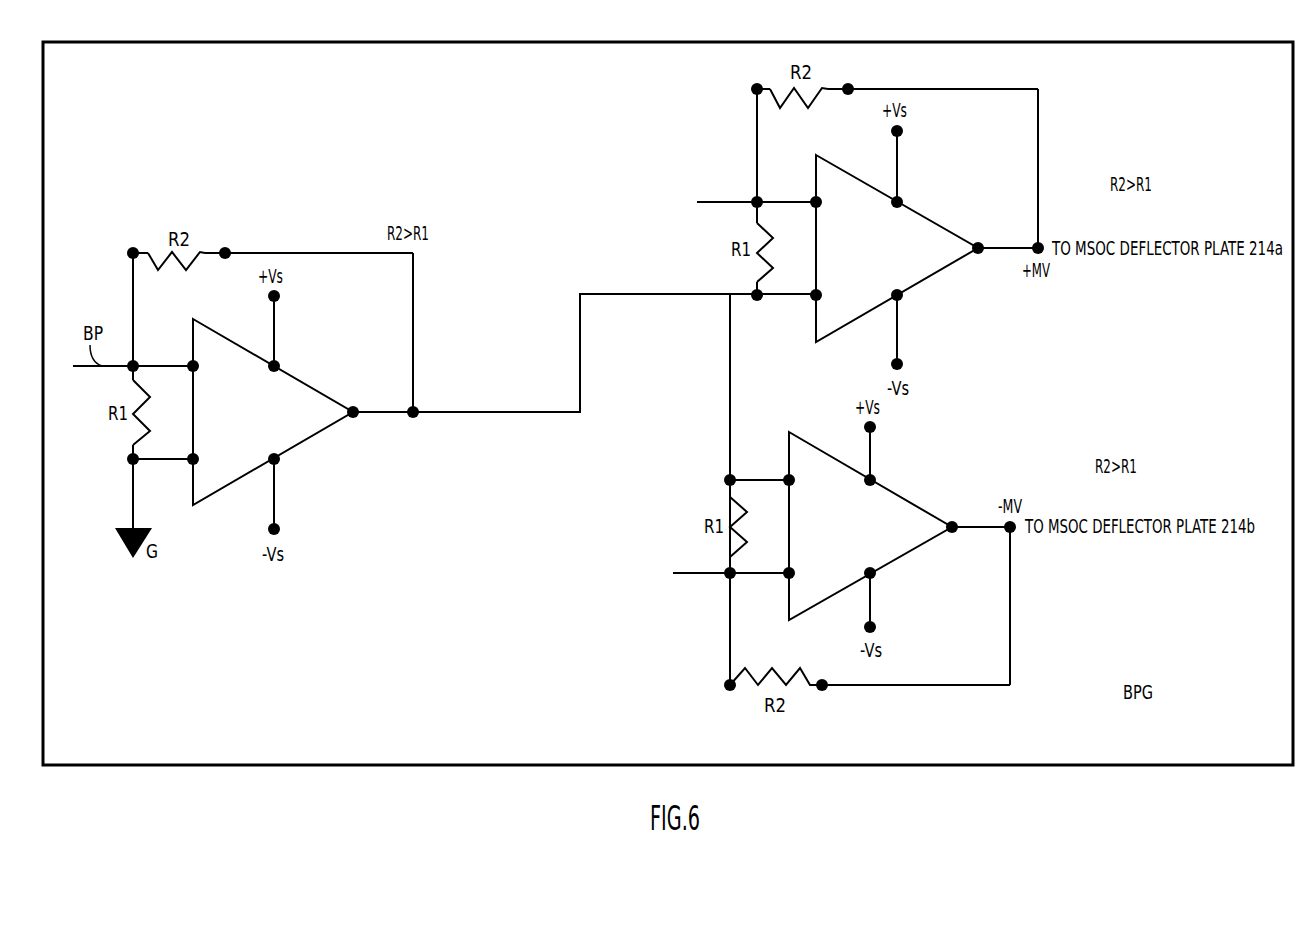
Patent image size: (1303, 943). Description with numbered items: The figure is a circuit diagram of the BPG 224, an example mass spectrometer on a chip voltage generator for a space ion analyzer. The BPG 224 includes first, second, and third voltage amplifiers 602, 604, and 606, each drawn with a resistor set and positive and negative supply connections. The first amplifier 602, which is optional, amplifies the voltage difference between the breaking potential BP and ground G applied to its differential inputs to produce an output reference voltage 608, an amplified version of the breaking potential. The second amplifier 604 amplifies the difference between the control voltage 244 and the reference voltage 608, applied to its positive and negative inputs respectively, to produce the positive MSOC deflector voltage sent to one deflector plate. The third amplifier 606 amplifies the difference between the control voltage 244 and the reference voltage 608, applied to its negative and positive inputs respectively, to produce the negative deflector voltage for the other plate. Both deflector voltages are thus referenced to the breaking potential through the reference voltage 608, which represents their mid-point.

The first voltage amplifier 602 is at (252, 422).
The second voltage amplifier 604 is at (877, 259).
The third voltage amplifier 606 is at (849, 537).
The output reference voltage 608 is at (520, 414).
The control voltage 244 is at (727, 202).
The BPG 224 is at (1123, 766).